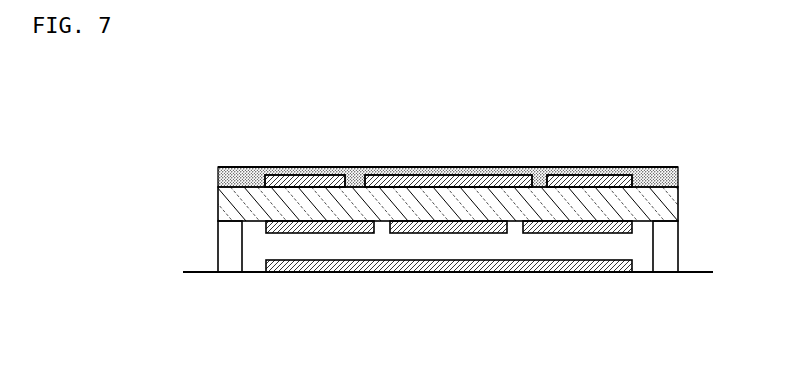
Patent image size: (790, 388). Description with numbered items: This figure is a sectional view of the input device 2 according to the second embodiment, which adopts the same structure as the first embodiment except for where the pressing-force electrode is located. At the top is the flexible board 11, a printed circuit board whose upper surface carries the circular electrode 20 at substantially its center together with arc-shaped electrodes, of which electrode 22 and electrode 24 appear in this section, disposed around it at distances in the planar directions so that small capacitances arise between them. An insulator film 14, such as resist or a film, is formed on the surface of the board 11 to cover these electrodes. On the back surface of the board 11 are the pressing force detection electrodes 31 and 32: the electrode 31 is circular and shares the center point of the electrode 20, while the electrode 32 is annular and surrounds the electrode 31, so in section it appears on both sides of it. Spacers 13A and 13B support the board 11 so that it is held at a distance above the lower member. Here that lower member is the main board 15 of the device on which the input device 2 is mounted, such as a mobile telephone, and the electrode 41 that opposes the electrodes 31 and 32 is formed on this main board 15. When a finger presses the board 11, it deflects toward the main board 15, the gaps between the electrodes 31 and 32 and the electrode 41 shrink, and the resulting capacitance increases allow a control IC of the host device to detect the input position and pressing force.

The input device 2 is at (364, 97).
The board 11 is at (222, 202).
The spacer 13A is at (220, 245).
The spacer 13B is at (672, 247).
The insulator film 14 is at (218, 167).
The main board 15 is at (697, 276).
The electrode 20 is at (512, 173).
The electrode 22 is at (302, 174).
The electrode 24 is at (608, 173).
The pressing force detection electrode 31 is at (388, 233).
The pressing force detection electrode 32 is at (263, 233).
The electrode 41 is at (455, 273).